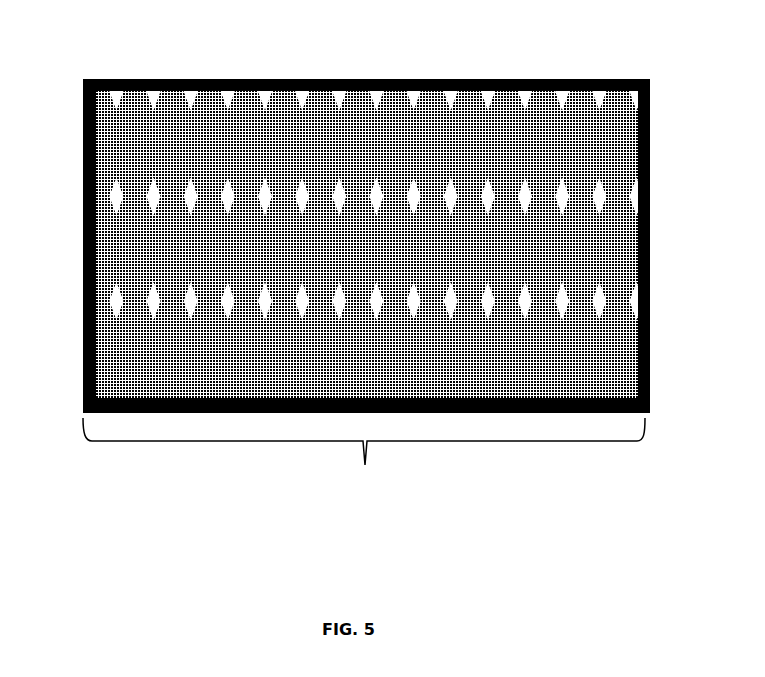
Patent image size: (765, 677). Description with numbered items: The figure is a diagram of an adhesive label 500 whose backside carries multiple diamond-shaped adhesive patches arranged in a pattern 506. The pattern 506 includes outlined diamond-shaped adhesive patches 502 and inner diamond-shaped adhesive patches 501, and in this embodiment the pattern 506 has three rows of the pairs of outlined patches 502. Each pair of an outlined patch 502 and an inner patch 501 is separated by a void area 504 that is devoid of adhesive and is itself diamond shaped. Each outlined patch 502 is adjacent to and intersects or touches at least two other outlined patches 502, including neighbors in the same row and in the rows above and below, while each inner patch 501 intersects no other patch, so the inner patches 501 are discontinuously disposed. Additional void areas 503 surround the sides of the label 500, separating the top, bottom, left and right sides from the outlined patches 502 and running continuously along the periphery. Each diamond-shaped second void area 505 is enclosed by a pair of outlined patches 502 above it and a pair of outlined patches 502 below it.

The adhesive label 500 is at (212, 80).
The inner diamond-shaped adhesive patch 501 is at (137, 148).
The outlined diamond-shaped adhesive patch 502 is at (120, 235).
The void area 503 is at (303, 100).
The void area 504 is at (433, 117).
The second void area 505 is at (597, 205).
The pattern 506 is at (364, 457).